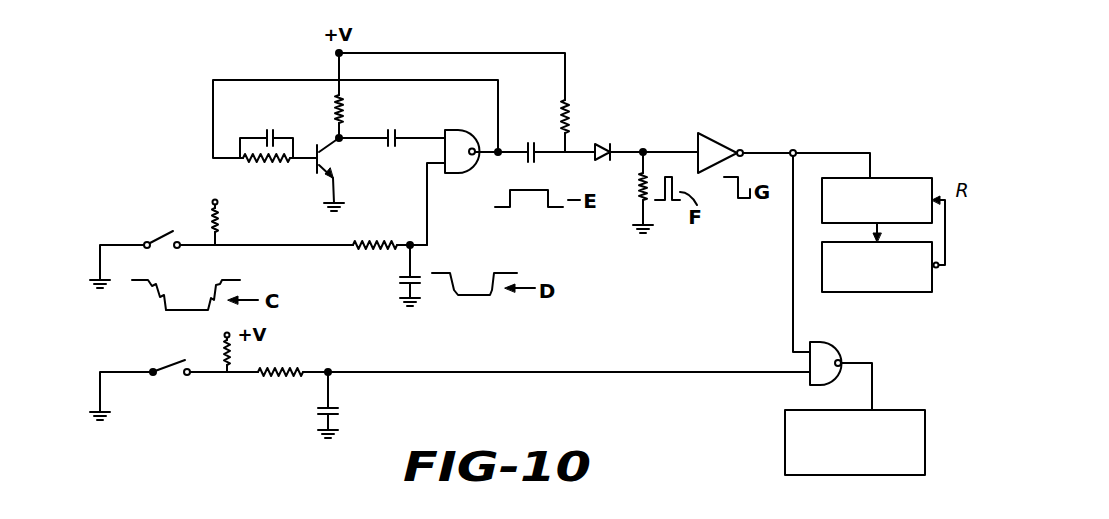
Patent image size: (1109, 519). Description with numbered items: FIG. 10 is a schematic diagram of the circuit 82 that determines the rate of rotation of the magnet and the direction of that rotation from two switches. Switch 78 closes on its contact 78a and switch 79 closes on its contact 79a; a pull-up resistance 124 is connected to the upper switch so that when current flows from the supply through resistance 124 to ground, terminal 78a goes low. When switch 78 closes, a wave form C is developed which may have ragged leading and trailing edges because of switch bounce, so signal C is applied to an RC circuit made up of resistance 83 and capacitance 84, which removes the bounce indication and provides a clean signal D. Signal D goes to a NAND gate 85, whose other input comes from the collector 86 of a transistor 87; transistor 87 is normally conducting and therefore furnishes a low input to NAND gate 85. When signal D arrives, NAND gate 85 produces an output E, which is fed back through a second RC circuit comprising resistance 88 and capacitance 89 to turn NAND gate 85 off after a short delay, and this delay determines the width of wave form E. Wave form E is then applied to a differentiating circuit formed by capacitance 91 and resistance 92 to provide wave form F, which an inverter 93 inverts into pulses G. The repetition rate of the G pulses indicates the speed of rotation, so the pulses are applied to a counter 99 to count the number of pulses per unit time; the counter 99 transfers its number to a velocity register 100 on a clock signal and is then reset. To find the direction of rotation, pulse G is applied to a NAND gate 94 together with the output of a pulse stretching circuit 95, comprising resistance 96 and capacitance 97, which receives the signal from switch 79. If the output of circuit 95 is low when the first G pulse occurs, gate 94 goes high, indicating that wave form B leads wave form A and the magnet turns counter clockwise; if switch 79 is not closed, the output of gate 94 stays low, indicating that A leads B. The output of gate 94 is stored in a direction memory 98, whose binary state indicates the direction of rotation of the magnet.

The switch 78 is at (163, 233).
The contact 78a is at (179, 250).
The switch 79 is at (172, 364).
The contact 79a is at (188, 378).
The circuit 82 is at (572, 104).
The resistance 83 is at (383, 242).
The capacitance 84 is at (403, 289).
The NAND gate 85 is at (455, 130).
The collector 86 is at (342, 136).
The transistor 87 is at (333, 160).
The resistance 88 is at (262, 161).
The capacitance 89 is at (274, 133).
The capacitance 91 is at (534, 141).
The resistance 92 is at (638, 192).
The inverter 93 is at (718, 143).
The NAND gate 94 is at (824, 350).
The pulse stretching circuit 95 is at (270, 388).
The resistance 96 is at (285, 369).
The capacitance 97 is at (340, 415).
The direction memory 98 is at (785, 447).
The counter 99 is at (910, 178).
The velocity register 100 is at (916, 293).
The resistance 124 is at (221, 226).